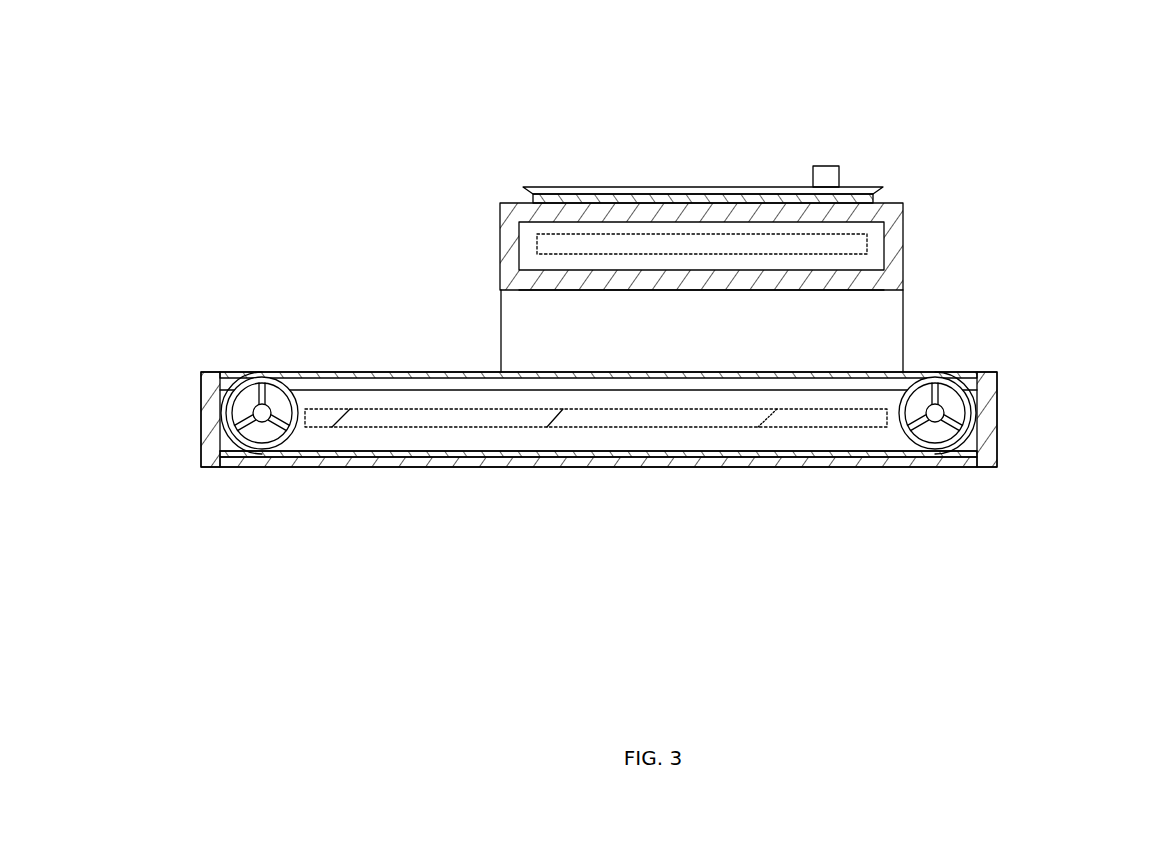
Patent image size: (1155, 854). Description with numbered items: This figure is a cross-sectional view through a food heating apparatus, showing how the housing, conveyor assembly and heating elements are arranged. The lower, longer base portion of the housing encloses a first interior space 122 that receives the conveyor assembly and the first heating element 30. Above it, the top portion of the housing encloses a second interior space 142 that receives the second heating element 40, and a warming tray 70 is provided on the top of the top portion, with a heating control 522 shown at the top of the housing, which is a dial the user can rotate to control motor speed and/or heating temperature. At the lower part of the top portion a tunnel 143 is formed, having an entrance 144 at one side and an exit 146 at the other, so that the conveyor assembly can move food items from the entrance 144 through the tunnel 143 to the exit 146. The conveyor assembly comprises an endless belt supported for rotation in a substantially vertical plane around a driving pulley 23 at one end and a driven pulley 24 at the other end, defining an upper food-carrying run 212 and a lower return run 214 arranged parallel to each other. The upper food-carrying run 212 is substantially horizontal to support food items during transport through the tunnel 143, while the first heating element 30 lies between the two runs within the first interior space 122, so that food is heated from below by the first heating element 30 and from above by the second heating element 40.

The second heating element 40 is at (708, 247).
The warming tray 70 is at (633, 190).
The heating control 522 is at (826, 176).
The tunnel 143 is at (661, 332).
The second interior space 142 is at (878, 245).
The entrance 144 is at (497, 331).
The exit 146 is at (905, 341).
The upper food-carrying run 212 is at (345, 372).
The lower return run 214 is at (506, 453).
The first heating element 30 is at (631, 418).
The driving pulley 23 is at (262, 430).
The driven pulley 24 is at (930, 430).
The first interior space 122 is at (969, 448).